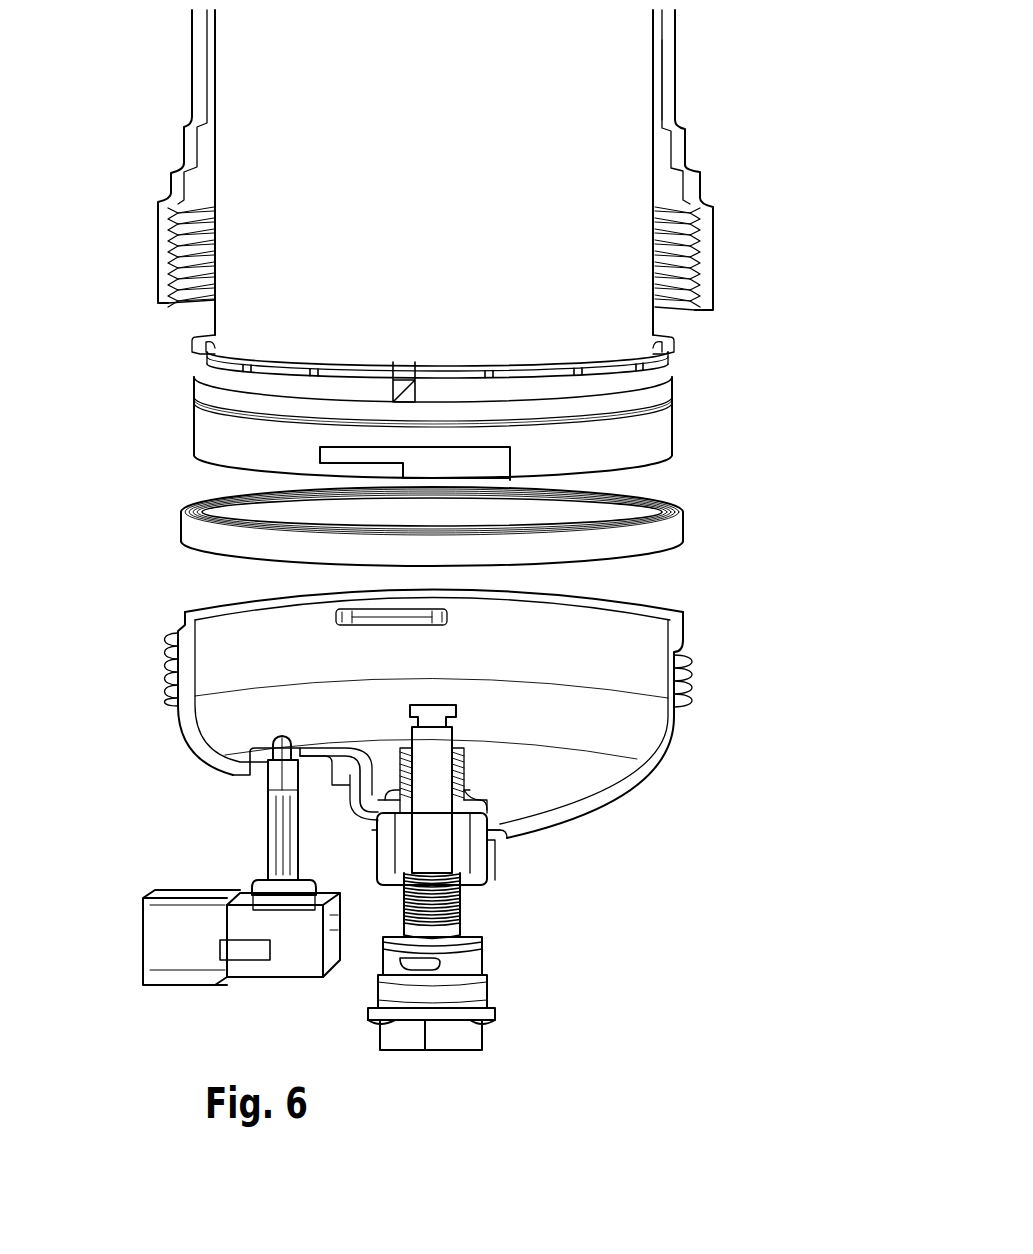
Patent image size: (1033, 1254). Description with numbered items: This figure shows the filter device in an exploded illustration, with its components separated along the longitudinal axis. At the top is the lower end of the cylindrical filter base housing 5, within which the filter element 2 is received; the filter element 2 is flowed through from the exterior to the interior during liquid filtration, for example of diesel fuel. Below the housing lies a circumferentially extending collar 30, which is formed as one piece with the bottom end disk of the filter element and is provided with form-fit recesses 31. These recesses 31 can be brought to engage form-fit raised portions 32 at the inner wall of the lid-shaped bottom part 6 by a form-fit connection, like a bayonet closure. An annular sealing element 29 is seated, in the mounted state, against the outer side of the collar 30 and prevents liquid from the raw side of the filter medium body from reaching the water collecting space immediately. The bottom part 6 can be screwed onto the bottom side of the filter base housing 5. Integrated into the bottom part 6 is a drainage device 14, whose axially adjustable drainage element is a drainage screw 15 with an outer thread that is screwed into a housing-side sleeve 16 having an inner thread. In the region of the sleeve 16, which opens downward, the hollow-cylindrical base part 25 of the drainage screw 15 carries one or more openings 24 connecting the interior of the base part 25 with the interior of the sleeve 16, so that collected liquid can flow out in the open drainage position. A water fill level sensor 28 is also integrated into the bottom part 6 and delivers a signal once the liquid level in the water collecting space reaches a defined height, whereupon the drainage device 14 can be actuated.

The filter element 2 is at (222, 65).
The filter base housing 5 is at (668, 88).
The bottom part 6 is at (610, 790).
The drainage device 14 is at (451, 961).
The drainage screw 15 is at (432, 778).
The sleeve 16 is at (493, 855).
The opening 24 is at (442, 968).
The base part 25 is at (400, 997).
The water fill level sensor 28 is at (267, 843).
The annular sealing element 29 is at (670, 537).
The collar 30 is at (466, 416).
The form-fit recess 31 is at (490, 464).
The form-fit raised portion 32 is at (412, 627).